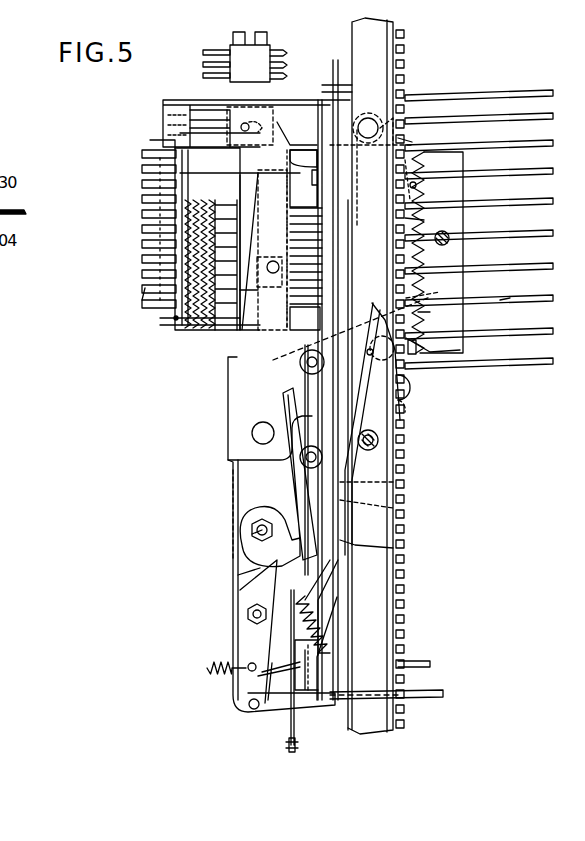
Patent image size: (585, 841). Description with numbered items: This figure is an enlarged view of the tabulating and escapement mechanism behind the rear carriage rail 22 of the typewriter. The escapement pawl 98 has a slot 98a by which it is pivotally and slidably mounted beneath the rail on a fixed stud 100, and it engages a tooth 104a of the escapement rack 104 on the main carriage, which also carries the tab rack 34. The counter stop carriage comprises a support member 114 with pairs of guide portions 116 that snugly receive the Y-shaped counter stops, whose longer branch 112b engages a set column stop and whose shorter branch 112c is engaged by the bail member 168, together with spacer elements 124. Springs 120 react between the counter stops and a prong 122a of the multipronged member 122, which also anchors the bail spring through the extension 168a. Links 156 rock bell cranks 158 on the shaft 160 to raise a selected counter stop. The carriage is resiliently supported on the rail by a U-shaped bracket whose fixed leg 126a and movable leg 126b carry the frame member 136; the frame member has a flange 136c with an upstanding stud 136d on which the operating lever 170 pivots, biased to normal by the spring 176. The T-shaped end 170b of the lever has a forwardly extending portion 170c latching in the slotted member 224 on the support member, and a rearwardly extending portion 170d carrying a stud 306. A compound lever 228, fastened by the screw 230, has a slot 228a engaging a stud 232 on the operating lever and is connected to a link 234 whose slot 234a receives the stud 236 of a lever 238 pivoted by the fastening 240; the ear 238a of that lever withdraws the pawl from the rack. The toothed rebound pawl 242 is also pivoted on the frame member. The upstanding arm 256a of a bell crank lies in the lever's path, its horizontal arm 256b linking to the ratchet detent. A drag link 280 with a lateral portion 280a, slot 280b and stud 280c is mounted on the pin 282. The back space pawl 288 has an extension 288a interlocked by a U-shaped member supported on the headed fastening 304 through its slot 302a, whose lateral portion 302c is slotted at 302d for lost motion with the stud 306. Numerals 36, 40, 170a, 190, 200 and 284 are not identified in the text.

The rear carriage rail 22 is at (397, 497).
The tab rack 34 is at (218, 45).
The connector body 36 is at (246, 45).
The connector terminals 40 is at (288, 66).
The pawl 98 is at (405, 430).
The slot 98a is at (415, 402).
The fixed stud 100 is at (412, 386).
The escapement rack 104 is at (450, 262).
The tooth 104a is at (418, 312).
The branch portion 112b is at (290, 218).
The branch portion 112c is at (174, 319).
The support member 114 is at (322, 205).
The guide portions 116 is at (305, 190).
The springs 120 is at (160, 210).
The multipronged member 122 is at (240, 333).
The prong 122a is at (165, 268).
The spacer elements 124 is at (287, 240).
The leg 126a is at (347, 660).
The leg 126b is at (340, 588).
The frame member 136 is at (350, 555).
The flange 136c is at (232, 508).
The stud 136d is at (252, 434).
The link 156 is at (540, 116).
The bell crank 158 is at (145, 290).
The shaft 160 is at (160, 225).
The bail member 168 is at (165, 190).
The extension 168a is at (242, 292).
The operating lever 170 is at (247, 592).
The mesh element 170a is at (168, 245).
The T-shaped end 170b is at (160, 143).
The forwardly extending portion 170c is at (332, 92).
The rearwardly extending portion 170d is at (243, 125).
The spring 176 is at (210, 662).
The lower rod 190 is at (440, 692).
The pivot pin 200 is at (416, 185).
The slotted member 224 is at (284, 120).
The compound lever 228 is at (298, 490).
The slot 228a is at (258, 523).
The screw fastening 230 is at (302, 448).
The stud 232 is at (255, 538).
The link 234 is at (296, 355).
The slot 234a is at (440, 297).
The stud 236 is at (510, 298).
The lever 238 is at (405, 418).
The ear 238a is at (430, 343).
The stud-like fastening 240 is at (390, 443).
The toothed pawl 242 is at (420, 355).
The upstanding arm 256a is at (272, 667).
The horizontally extending arm 256b is at (430, 664).
The drag link 280 is at (345, 543).
The lateral extending portion 280a is at (420, 218).
The slot 280b is at (405, 483).
The stud 280c is at (300, 585).
The pin 282 is at (400, 508).
The washer 284 is at (257, 568).
The back space pawl 288 is at (420, 190).
The extension 288a is at (405, 140).
The longitudinal slot 302a is at (398, 105).
The laterally extending portion 302c is at (162, 115).
The slot 302d is at (272, 107).
The fixed headed fastening 304 is at (364, 118).
The stud 306 is at (228, 125).